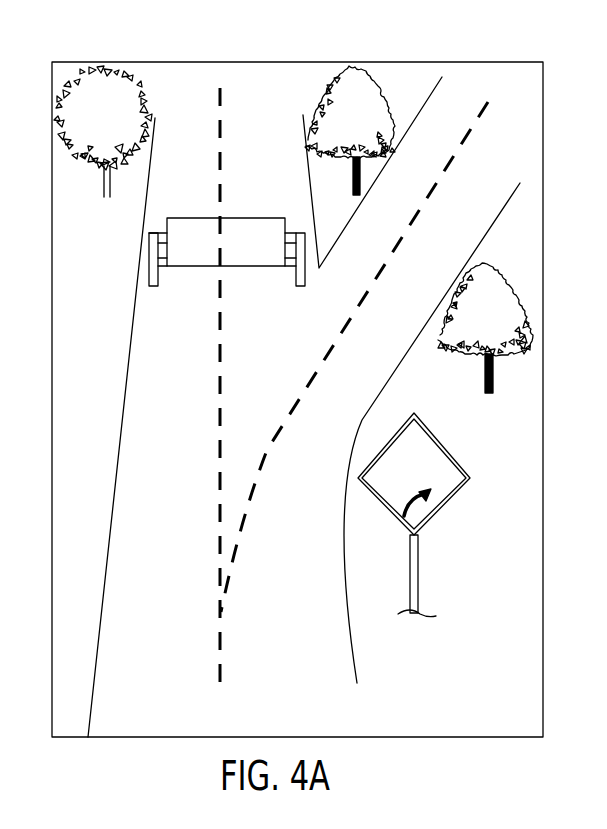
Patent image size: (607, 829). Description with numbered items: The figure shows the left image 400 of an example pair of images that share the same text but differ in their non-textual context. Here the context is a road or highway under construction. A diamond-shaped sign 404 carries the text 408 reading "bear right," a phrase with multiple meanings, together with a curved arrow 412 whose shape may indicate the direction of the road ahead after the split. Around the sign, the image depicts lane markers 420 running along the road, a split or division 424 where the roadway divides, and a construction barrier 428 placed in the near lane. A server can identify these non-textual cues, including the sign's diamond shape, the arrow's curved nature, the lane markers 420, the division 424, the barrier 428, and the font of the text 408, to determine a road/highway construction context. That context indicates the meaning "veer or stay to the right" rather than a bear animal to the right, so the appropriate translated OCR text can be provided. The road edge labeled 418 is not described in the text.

The image 400 is at (298, 62).
The sign 404 is at (447, 505).
The text 408 is at (412, 442).
The arrow 412 is at (403, 504).
The road edge 418 is at (335, 658).
The lane markers 420 is at (227, 575).
The split or division 424 is at (318, 266).
The construction barrier 428 is at (215, 228).